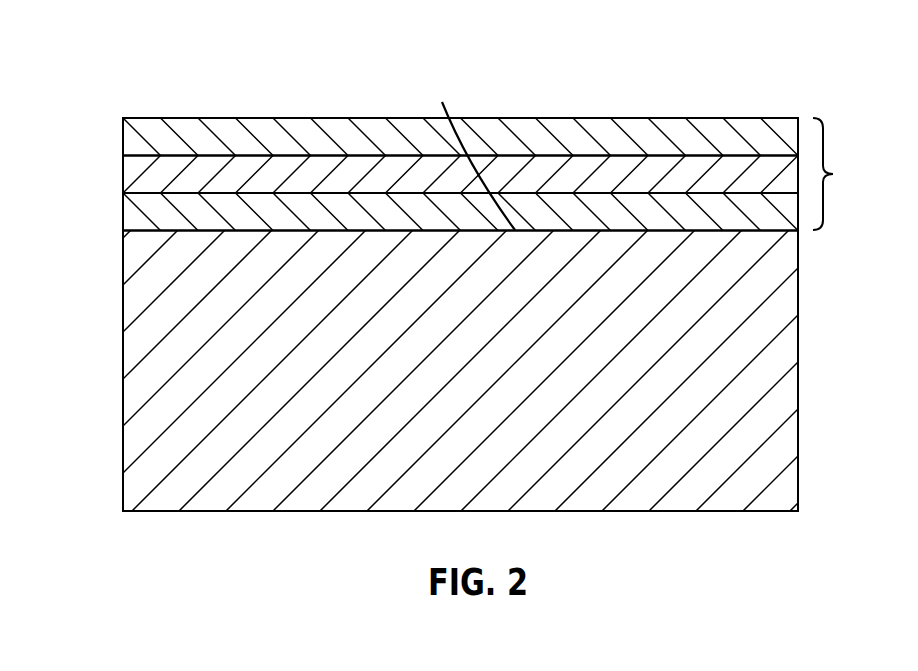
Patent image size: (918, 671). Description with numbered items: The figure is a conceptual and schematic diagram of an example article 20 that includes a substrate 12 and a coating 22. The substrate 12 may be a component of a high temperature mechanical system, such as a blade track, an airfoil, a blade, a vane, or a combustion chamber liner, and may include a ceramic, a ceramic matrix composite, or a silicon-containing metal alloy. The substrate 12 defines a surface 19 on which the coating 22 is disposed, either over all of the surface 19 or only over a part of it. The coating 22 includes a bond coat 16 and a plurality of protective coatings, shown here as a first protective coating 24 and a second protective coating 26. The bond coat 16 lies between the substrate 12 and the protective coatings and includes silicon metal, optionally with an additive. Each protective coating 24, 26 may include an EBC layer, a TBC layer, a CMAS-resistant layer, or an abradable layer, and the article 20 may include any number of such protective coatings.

The article 20 is at (180, 60).
The substrate 12 is at (122, 362).
The bond coat 16 is at (122, 212).
The first protective coating 24 is at (122, 181).
The second protective coating 26 is at (122, 140).
The coating 22 is at (840, 174).
The surface 19 is at (467, 151).